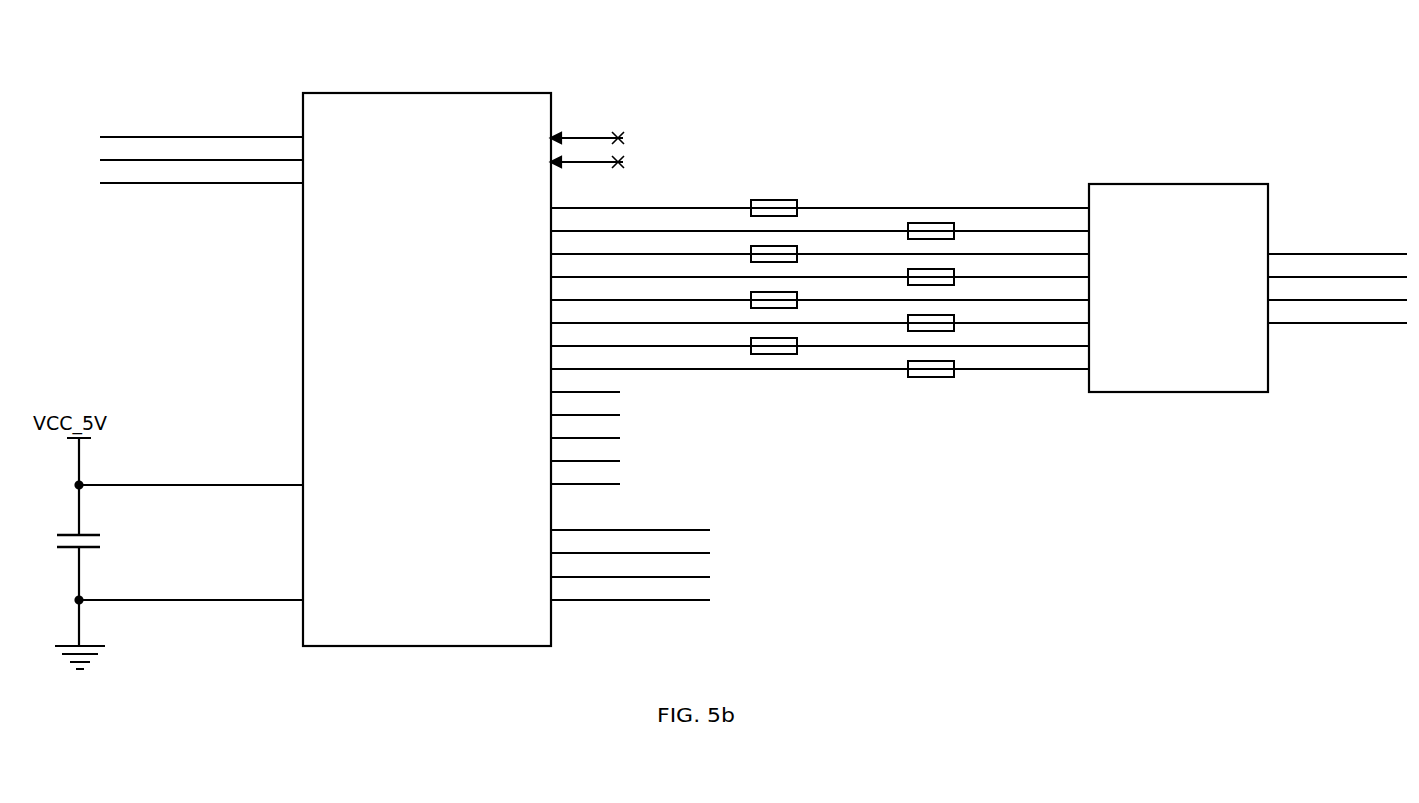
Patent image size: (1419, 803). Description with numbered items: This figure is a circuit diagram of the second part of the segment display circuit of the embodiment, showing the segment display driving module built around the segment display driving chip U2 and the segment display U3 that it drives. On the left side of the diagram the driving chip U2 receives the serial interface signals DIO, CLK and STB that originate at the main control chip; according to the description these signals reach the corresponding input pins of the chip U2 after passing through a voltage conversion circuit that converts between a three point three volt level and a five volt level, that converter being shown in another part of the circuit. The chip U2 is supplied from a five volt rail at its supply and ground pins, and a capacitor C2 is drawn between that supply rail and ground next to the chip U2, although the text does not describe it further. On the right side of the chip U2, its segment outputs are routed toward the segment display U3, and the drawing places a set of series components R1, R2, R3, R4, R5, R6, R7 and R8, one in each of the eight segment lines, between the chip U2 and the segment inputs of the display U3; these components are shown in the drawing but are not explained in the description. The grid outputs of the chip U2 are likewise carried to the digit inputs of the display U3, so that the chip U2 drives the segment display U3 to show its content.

The segment display driving chip U2 is at (584, 335).
The segment display U3 is at (1228, 299).
The decoupling capacitor C2 is at (92, 527).
The segment resistor R1 is at (751, 201).
The segment resistor R2 is at (908, 224).
The segment resistor R3 is at (751, 247).
The segment resistor R4 is at (908, 270).
The segment resistor R5 is at (751, 293).
The segment resistor R6 is at (908, 316).
The segment resistor R7 is at (751, 339).
The segment resistor R8 is at (908, 362).